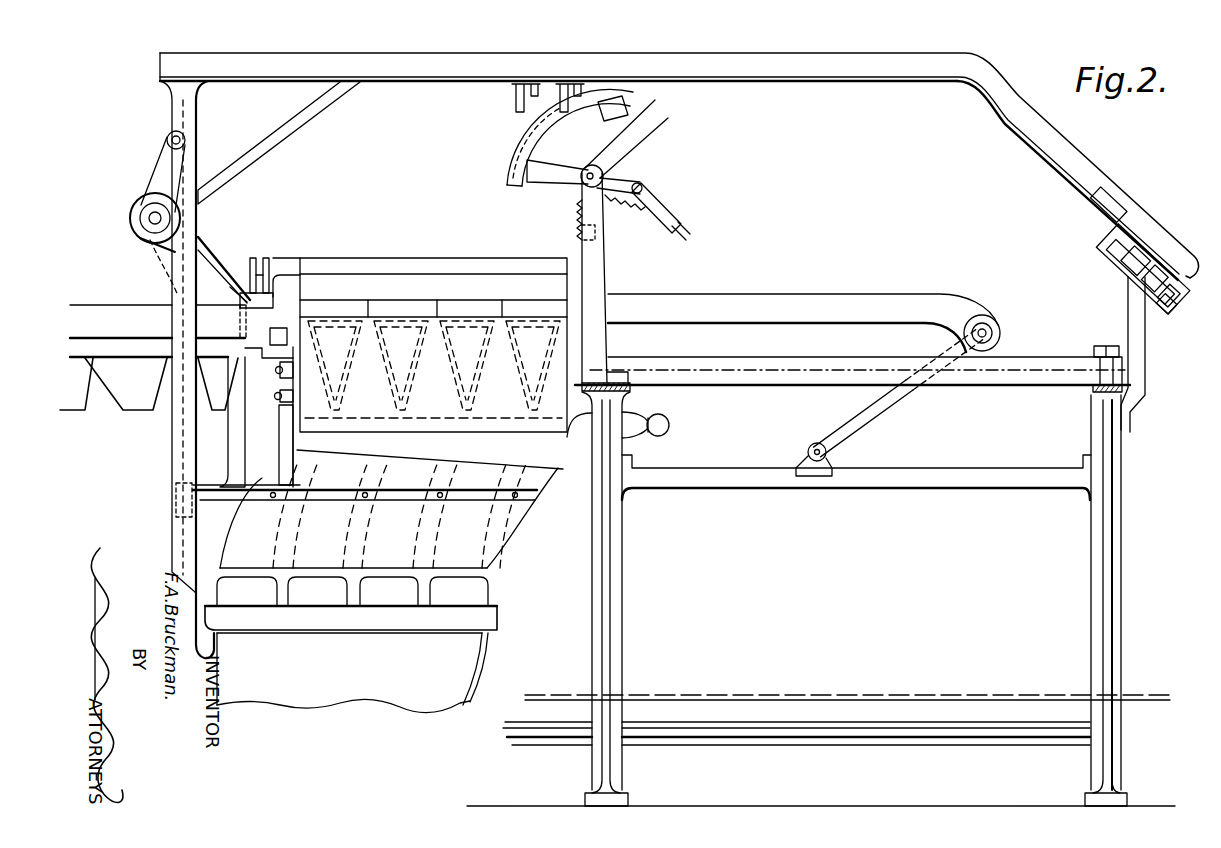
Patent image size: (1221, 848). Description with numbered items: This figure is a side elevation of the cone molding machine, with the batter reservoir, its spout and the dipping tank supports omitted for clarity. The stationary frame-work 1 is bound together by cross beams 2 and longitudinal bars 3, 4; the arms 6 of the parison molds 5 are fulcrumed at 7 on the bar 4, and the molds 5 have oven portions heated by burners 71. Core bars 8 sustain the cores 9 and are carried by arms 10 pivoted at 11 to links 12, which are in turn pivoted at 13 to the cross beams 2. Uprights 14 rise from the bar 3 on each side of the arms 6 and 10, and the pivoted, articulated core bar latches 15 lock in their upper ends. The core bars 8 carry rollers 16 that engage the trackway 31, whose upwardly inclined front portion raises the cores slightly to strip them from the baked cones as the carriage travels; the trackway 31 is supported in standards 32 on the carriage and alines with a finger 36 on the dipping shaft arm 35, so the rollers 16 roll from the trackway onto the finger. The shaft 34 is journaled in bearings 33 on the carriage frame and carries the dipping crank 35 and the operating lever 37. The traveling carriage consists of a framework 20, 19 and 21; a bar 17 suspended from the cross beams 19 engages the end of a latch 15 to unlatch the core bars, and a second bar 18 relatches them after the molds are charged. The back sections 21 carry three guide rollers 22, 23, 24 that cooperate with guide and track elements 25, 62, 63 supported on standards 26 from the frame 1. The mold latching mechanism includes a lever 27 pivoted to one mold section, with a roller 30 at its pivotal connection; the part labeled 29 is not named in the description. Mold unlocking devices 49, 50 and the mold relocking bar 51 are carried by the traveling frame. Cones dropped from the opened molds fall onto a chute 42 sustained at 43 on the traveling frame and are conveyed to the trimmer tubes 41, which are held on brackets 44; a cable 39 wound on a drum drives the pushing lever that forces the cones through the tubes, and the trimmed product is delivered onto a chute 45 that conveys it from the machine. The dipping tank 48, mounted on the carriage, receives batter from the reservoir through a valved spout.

The stationary frame-work 1 is at (612, 556).
The cross beams 2 is at (979, 480).
The longitudinal bar 3 is at (628, 388).
The longitudinal bar 4 is at (1095, 392).
The parison molds 5 is at (403, 375).
The arms 6 is at (852, 371).
The fulcrum 7 is at (1106, 345).
The core bars 8 is at (433, 345).
The cores 9 is at (470, 350).
The arms 10 is at (803, 323).
The pivot 11 is at (988, 331).
The links 12 is at (900, 393).
The pivot 13 is at (810, 449).
The uprights 14 is at (600, 305).
The core bar latches 15 is at (552, 172).
The rollers 16 is at (262, 258).
The bar 17 is at (636, 110).
The second bar 18 is at (505, 186).
The cross beams 19 is at (821, 64).
The framework 20 is at (181, 531).
The back sections 21 is at (1090, 162).
The roller 22 is at (1090, 212).
The roller 23 is at (1133, 228).
The roller 24 is at (1170, 250).
The guide and track element 25 is at (1108, 237).
The standards 26 is at (1140, 345).
The lever 27 is at (291, 372).
The pin 29 is at (293, 396).
The roller 30 is at (276, 372).
The trackway 31 is at (250, 282).
The standards 32 is at (236, 433).
The bearings 33 is at (130, 230).
The shaft 34 is at (150, 218).
The dipping shaft arm 35 is at (205, 267).
The finger 36 is at (278, 282).
The operating lever 37 is at (166, 136).
The cable 39 is at (181, 424).
The trimmer tubes 41 is at (470, 594).
The chute 42 is at (490, 517).
The chute support 43 is at (538, 495).
The brackets 44 is at (483, 621).
The chute 45 is at (352, 673).
The dipping tank 48 is at (153, 357).
The parison mold unlocking device 49 is at (275, 396).
The parison mold unlocking device 50 is at (281, 441).
The mold relocking bar 51 is at (278, 334).
The guide and track element 62 is at (1158, 235).
The guide and track element 63 is at (1187, 298).
The heating burners 71 is at (525, 420).